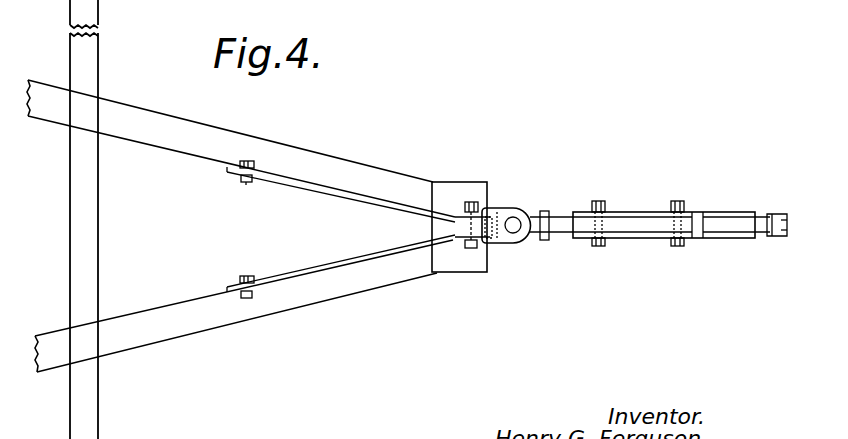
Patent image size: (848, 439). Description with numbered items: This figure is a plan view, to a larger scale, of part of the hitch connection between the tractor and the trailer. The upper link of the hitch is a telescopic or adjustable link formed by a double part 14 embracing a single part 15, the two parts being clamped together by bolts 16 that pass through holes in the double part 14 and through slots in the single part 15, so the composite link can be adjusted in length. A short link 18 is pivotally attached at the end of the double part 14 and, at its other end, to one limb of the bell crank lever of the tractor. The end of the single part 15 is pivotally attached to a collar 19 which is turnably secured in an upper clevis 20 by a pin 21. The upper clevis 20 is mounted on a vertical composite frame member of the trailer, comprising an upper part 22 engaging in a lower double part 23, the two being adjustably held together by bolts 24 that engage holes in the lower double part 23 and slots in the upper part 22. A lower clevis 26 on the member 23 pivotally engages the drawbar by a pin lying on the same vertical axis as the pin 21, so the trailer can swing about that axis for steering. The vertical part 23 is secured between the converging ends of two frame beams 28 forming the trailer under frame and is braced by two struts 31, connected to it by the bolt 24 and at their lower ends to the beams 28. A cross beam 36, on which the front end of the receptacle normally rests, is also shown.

The double part 14 is at (718, 242).
The single part 15 is at (643, 225).
The bolts 16 is at (604, 204).
The short link 18 is at (722, 225).
The collar 19 is at (545, 208).
The upper clevis 20 is at (504, 208).
The pin 21 is at (510, 238).
The upper part 22 is at (473, 228).
The lower double part 23 is at (450, 223).
The bolts 24 is at (471, 202).
The lower clevis 26 is at (451, 9).
The frame beams 28 is at (330, 175).
The struts 31 is at (410, 208).
The cross beam 36 is at (90, 52).